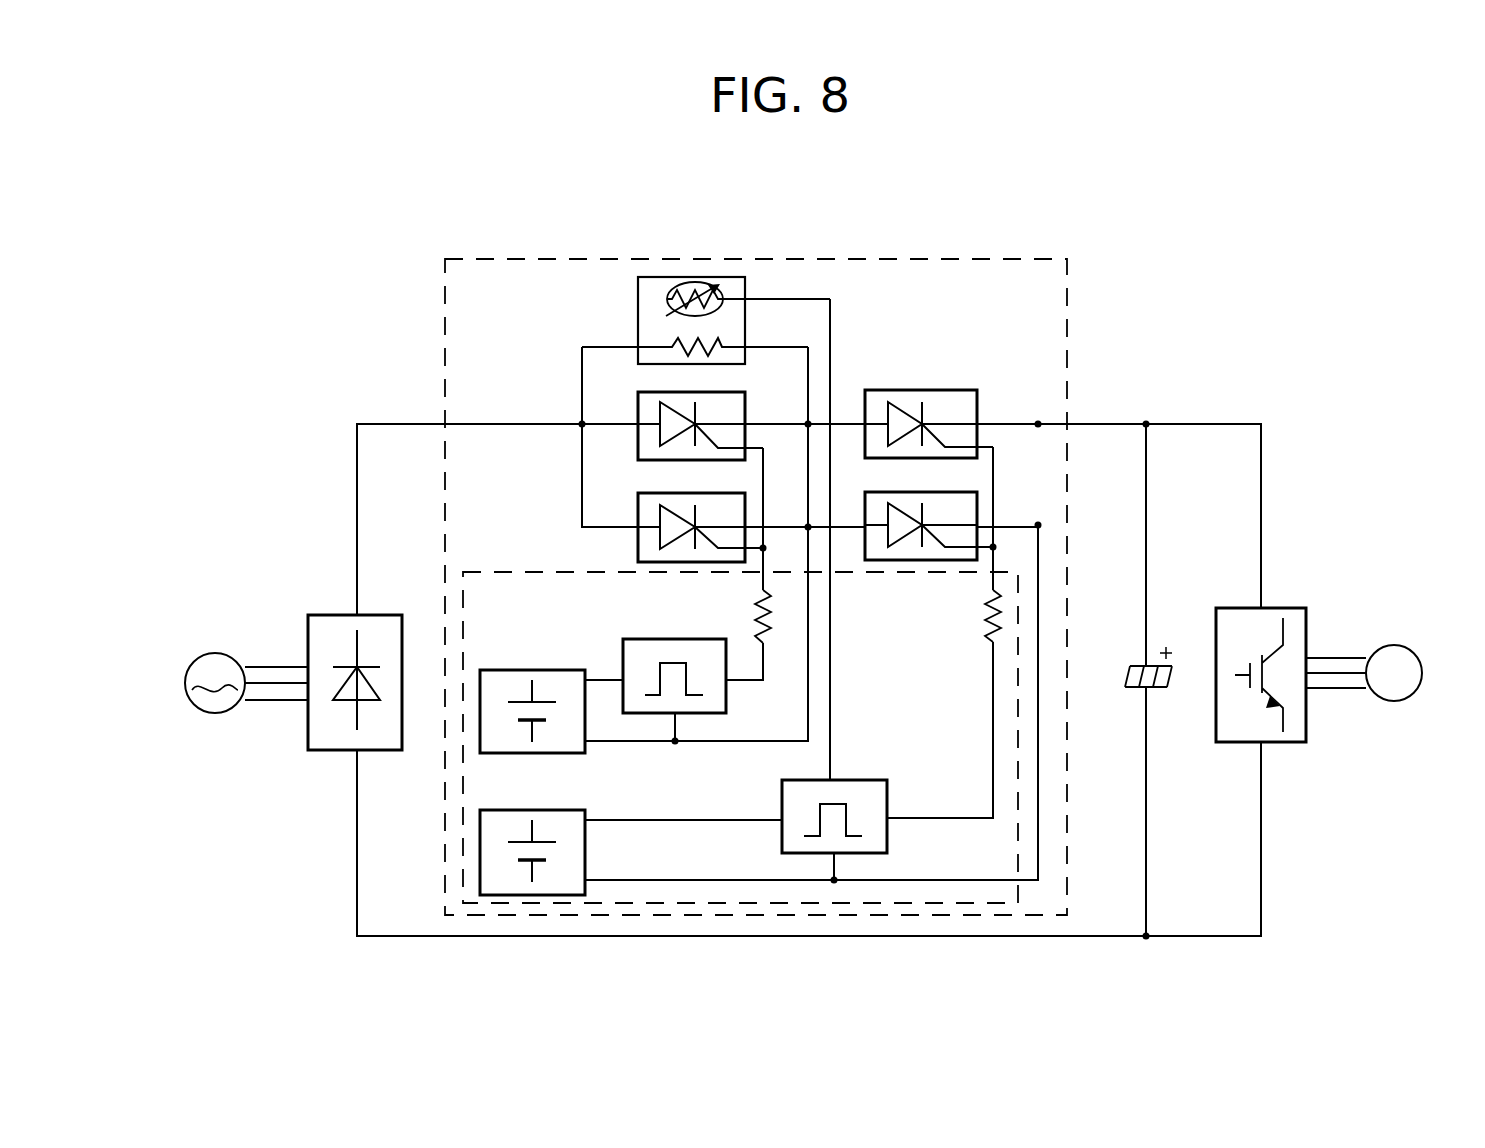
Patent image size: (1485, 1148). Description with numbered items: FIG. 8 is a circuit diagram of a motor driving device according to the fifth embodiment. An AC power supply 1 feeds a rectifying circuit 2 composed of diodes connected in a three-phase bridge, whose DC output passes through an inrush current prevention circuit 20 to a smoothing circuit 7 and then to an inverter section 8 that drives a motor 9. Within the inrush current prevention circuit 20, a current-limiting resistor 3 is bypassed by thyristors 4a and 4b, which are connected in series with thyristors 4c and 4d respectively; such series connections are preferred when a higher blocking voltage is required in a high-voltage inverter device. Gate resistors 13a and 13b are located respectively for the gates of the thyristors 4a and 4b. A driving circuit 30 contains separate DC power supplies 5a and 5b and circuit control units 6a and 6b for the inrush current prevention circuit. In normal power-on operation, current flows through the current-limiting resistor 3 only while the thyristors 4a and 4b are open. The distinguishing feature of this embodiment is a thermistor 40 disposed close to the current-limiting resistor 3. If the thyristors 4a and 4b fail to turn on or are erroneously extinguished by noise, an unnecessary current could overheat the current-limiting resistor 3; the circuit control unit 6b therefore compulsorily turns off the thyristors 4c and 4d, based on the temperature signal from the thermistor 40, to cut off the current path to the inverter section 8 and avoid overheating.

The AC power supply 1 is at (228, 660).
The rectifying circuit 2 is at (380, 614).
The current-limiting resistor 3 is at (706, 294).
The thyristor 4a is at (670, 395).
The thyristor 4b is at (670, 496).
The thyristor 4c is at (897, 393).
The thyristor 4d is at (897, 494).
The DC power supply 5a is at (527, 669).
The DC power supply 5b is at (527, 809).
The circuit control unit 6a is at (645, 639).
The circuit control unit 6b is at (870, 781).
The smoothing circuit 7 is at (1145, 666).
The inverter section 8 is at (1292, 608).
The motor 9 is at (1400, 648).
The gate resistor 13a is at (760, 612).
The gate resistor 13b is at (988, 612).
The inrush current prevention circuit 20 is at (878, 259).
The driving circuit 30 is at (498, 575).
The thermistor 40 is at (668, 299).